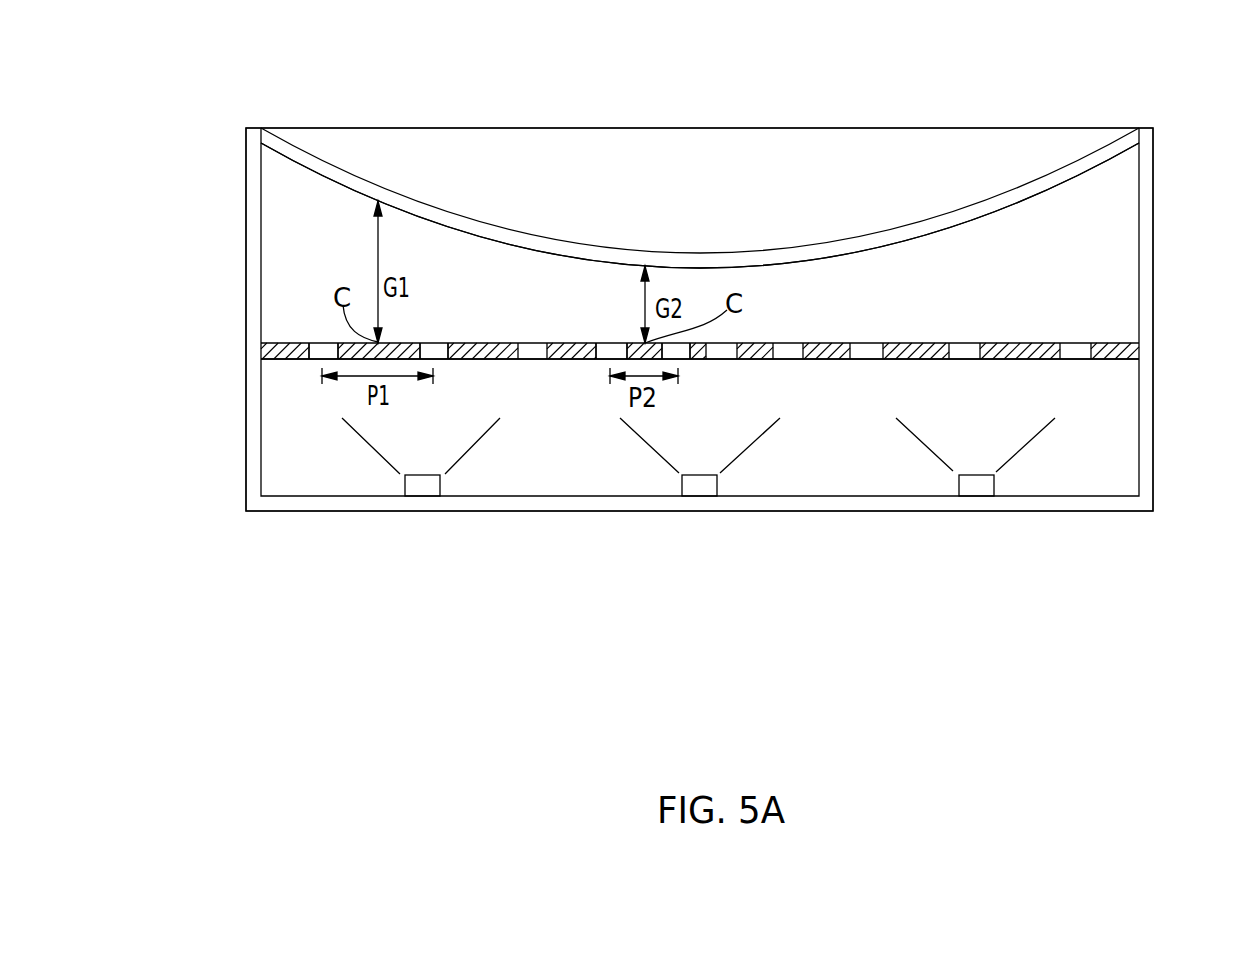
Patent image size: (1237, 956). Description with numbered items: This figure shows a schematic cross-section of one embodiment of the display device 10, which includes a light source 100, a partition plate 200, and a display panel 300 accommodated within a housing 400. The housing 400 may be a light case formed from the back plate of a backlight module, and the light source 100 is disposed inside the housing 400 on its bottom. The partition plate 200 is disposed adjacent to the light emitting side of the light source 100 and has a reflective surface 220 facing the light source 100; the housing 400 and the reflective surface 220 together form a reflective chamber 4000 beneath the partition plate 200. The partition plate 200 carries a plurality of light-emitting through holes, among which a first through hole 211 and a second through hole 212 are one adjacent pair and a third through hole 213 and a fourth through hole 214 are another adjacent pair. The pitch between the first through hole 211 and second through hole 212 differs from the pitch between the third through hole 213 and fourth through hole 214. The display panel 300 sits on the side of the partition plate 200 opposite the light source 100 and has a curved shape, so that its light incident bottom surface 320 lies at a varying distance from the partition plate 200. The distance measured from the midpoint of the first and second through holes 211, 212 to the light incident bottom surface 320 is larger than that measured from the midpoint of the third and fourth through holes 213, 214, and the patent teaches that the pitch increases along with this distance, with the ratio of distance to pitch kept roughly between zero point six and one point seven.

The display device 10 is at (220, 108).
The light source 100 is at (978, 485).
The partition plate 200 is at (1028, 343).
The first through hole 211 is at (321, 374).
The second through hole 212 is at (458, 374).
The third through hole 213 is at (605, 375).
The fourth through hole 214 is at (695, 375).
The reflective surface 220 is at (1050, 359).
The display panel 300 is at (1117, 145).
The light incident bottom surface 320 is at (1053, 190).
The housing 400 is at (1139, 246).
The reflective chamber 4000 is at (1128, 453).